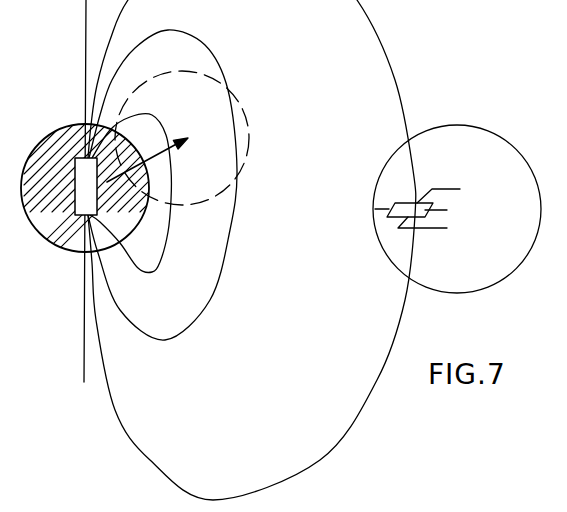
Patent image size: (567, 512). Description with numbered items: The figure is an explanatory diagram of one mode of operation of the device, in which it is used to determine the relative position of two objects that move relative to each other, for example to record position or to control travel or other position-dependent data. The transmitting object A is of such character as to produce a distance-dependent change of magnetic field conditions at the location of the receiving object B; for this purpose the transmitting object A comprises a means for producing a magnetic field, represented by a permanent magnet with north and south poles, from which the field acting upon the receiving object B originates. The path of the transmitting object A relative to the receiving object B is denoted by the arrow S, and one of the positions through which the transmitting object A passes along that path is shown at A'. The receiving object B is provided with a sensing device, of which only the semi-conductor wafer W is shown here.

The transmitting object A is at (102, 198).
The position of the transmitting object A' is at (182, 131).
The path arrow S is at (147, 160).
The receiving object B is at (466, 125).
The semi-conductor wafer W is at (402, 209).